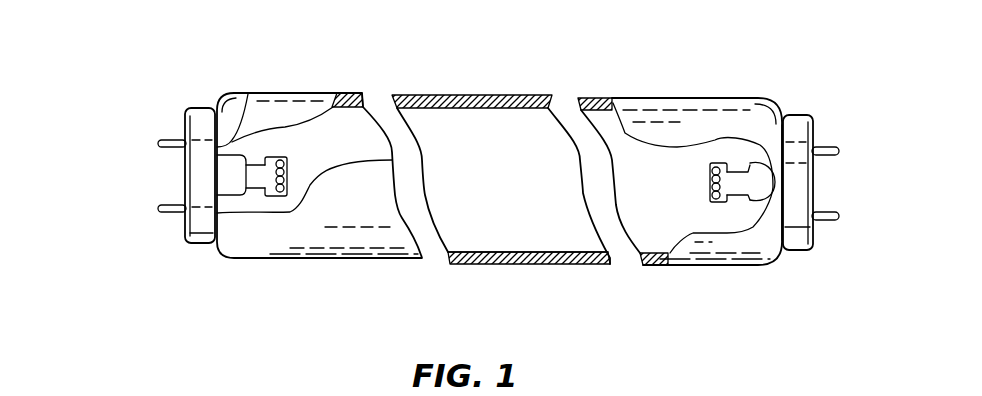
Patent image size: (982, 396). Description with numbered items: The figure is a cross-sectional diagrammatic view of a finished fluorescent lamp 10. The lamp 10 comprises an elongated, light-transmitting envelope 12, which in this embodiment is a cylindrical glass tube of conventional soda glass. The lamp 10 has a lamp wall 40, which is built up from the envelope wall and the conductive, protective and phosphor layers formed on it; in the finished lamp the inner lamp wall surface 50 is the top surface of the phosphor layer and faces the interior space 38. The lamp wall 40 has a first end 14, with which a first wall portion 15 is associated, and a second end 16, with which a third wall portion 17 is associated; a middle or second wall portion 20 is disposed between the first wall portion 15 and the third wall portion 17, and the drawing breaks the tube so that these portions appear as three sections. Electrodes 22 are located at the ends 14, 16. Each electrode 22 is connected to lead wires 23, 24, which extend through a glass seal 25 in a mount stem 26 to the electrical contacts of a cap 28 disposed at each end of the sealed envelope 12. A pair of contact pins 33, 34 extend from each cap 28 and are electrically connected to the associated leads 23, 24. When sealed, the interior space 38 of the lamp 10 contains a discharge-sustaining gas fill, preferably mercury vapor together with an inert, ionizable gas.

The fluorescent lamp 10 is at (163, 30).
The envelope 12 is at (672, 115).
The first end 14 is at (219, 102).
The first wall portion 15 is at (303, 108).
The second end 16 is at (782, 109).
The third wall portion 17 is at (730, 100).
The second wall portion 20 is at (472, 124).
The electrodes 22 is at (275, 158).
The lead wire 23 is at (743, 170).
The lead wire 24 is at (750, 200).
The glass seal 25 is at (247, 110).
The mount stem 26 is at (230, 177).
The cap 28 is at (200, 227).
The contact pin 33 is at (831, 148).
The contact pin 34 is at (834, 210).
The interior space 38 is at (507, 178).
The lamp wall 40 is at (527, 263).
The inner lamp wall surface 50 is at (477, 252).